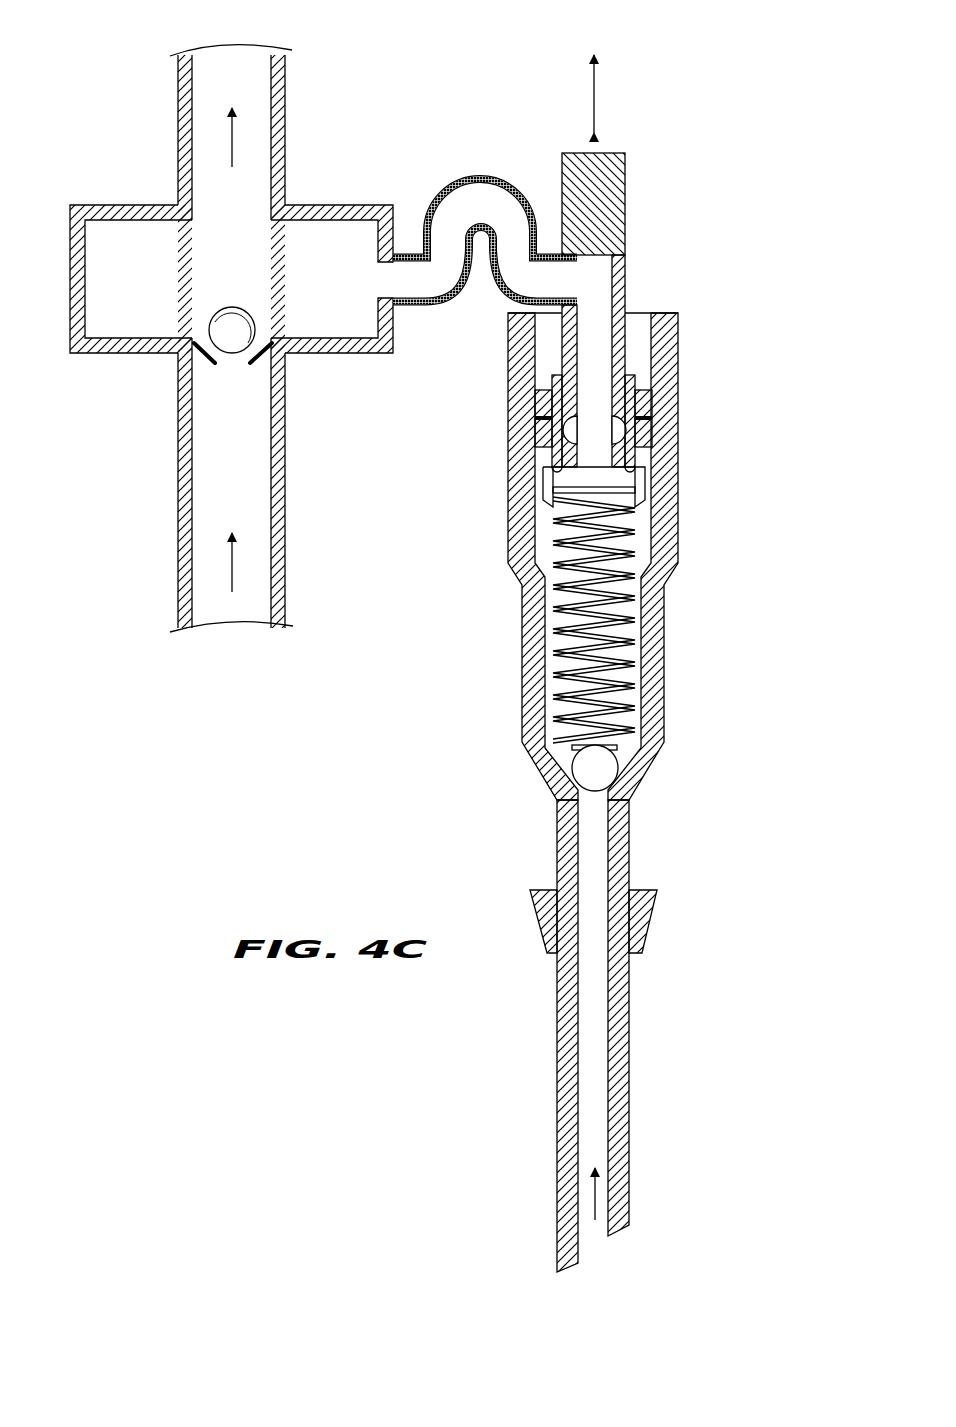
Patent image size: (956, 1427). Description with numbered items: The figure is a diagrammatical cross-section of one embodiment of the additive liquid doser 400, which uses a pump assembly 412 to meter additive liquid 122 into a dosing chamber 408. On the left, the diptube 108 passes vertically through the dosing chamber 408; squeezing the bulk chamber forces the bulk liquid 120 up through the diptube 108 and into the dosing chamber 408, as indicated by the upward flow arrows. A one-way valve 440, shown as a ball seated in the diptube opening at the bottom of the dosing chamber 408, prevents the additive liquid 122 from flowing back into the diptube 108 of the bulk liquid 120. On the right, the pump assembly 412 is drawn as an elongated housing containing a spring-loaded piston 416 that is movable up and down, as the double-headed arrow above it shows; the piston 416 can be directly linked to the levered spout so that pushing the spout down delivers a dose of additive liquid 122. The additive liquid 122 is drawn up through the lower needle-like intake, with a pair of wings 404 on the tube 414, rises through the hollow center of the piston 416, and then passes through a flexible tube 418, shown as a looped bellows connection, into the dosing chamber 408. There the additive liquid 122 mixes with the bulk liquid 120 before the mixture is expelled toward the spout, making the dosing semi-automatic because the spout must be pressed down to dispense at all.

The diptube 108 is at (178, 480).
The bulk liquid 120 is at (232, 120).
The additive liquid 122 is at (595, 1192).
The additive liquid doser 400 is at (722, 124).
The wings 404 is at (655, 916).
The dosing chamber 408 is at (70, 276).
The pump assembly 412 is at (696, 314).
The needle 414 is at (629, 1015).
The piston 416 is at (627, 205).
The flexible tube 418 is at (502, 178).
The one-way valve 440 is at (196, 340).